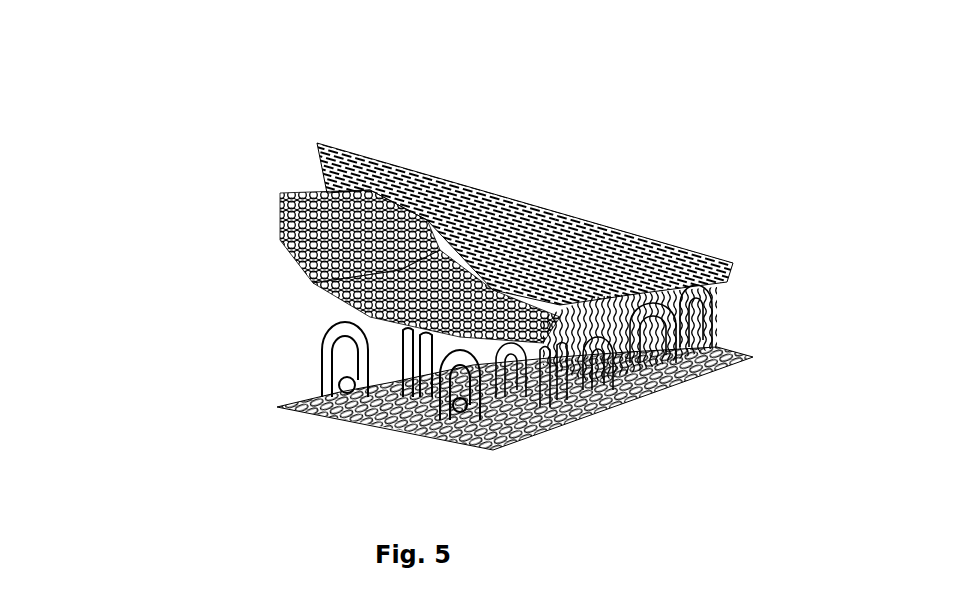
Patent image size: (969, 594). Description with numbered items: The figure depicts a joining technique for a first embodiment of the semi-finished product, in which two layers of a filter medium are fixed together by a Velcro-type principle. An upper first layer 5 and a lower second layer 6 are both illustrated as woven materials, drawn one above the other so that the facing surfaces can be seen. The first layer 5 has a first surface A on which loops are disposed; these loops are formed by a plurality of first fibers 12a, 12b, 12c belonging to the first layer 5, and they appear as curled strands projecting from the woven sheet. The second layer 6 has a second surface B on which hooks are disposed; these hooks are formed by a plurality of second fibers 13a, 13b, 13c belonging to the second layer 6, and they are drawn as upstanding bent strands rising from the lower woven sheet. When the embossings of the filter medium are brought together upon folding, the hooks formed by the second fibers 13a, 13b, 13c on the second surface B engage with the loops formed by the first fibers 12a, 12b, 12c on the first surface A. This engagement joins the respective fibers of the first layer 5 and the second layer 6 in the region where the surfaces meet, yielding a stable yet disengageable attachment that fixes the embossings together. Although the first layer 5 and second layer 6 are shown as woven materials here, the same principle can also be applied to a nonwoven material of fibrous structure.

The first layer 5 is at (370, 163).
The first surface A is at (318, 146).
The second surface B is at (360, 433).
The second layer 6 is at (280, 408).
The first fiber 12a is at (287, 230).
The first fiber 12b is at (320, 292).
The first fiber 12c is at (560, 292).
The second fiber 13a is at (313, 382).
The second fiber 13b is at (680, 390).
The second fiber 13c is at (470, 403).